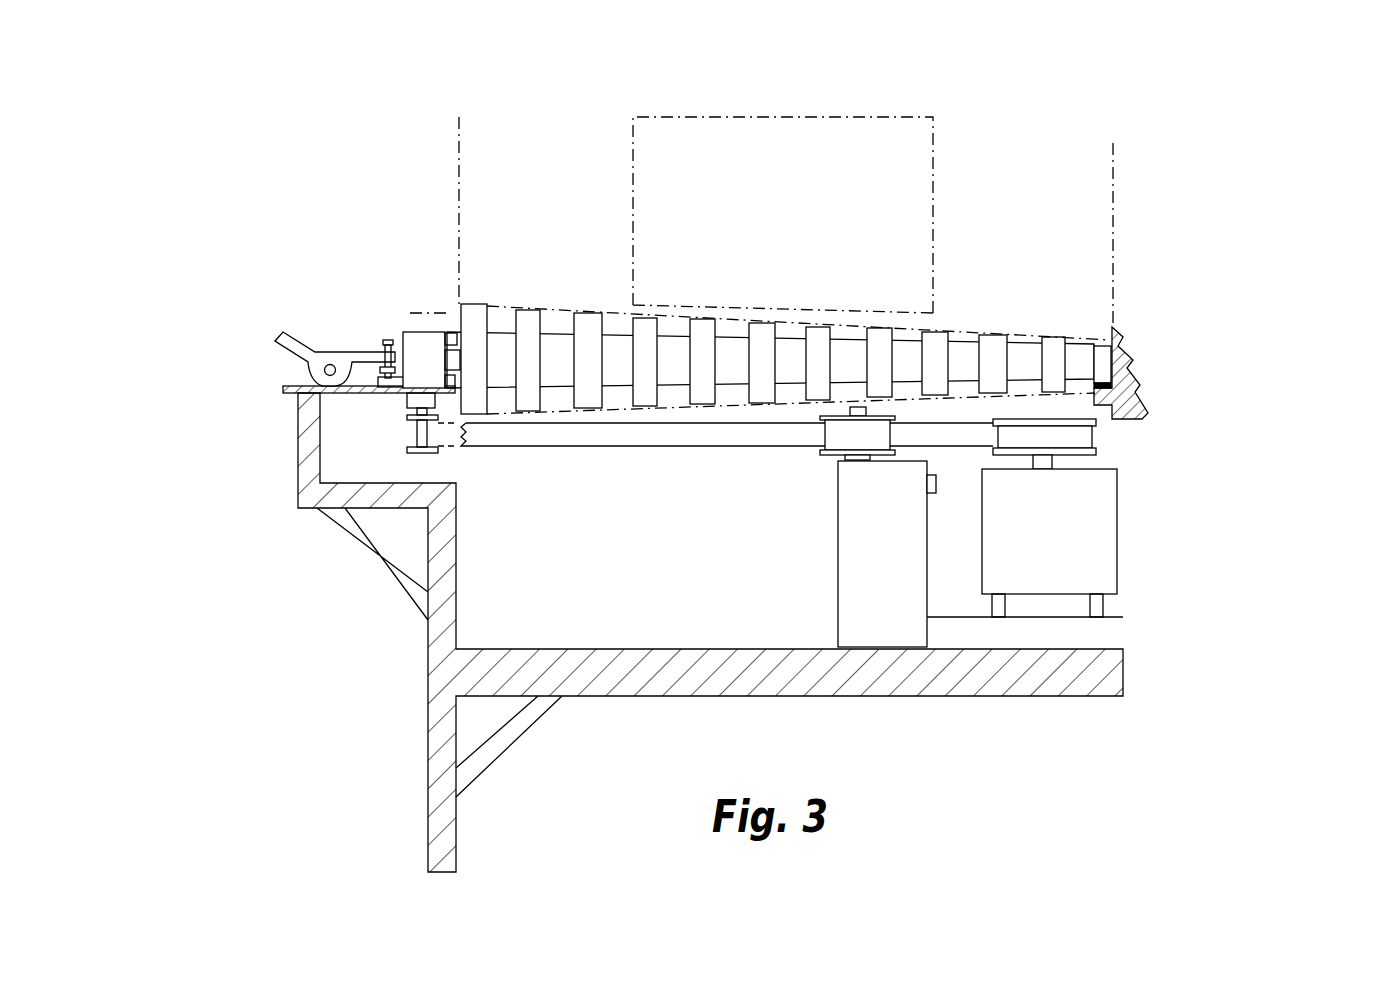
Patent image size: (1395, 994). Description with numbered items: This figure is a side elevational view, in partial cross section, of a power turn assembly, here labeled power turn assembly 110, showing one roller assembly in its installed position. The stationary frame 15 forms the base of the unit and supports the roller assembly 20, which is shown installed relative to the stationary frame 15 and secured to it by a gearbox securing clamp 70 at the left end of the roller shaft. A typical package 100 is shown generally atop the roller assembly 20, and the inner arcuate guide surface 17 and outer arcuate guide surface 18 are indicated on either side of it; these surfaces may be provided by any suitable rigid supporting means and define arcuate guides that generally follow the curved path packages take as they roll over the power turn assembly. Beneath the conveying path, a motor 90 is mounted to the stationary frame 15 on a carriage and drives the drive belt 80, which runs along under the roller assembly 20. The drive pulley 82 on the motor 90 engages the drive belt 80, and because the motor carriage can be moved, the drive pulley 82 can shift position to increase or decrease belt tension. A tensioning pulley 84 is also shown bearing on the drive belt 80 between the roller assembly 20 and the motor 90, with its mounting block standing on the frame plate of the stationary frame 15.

The stationary frame 15 is at (437, 728).
The inner arcuate guide surface 17 is at (1113, 183).
The outer arcuate guide surface 18 is at (459, 185).
The roller assembly 20 is at (1073, 305).
The gearbox securing clamp 70 is at (293, 330).
The drive belt 80 is at (557, 444).
The drive pulley 82 is at (1097, 455).
The tensioning pulley 84 is at (796, 527).
The motor 90 is at (1093, 553).
The package 100 is at (715, 206).
The power turn assembly 110 is at (1242, 123).